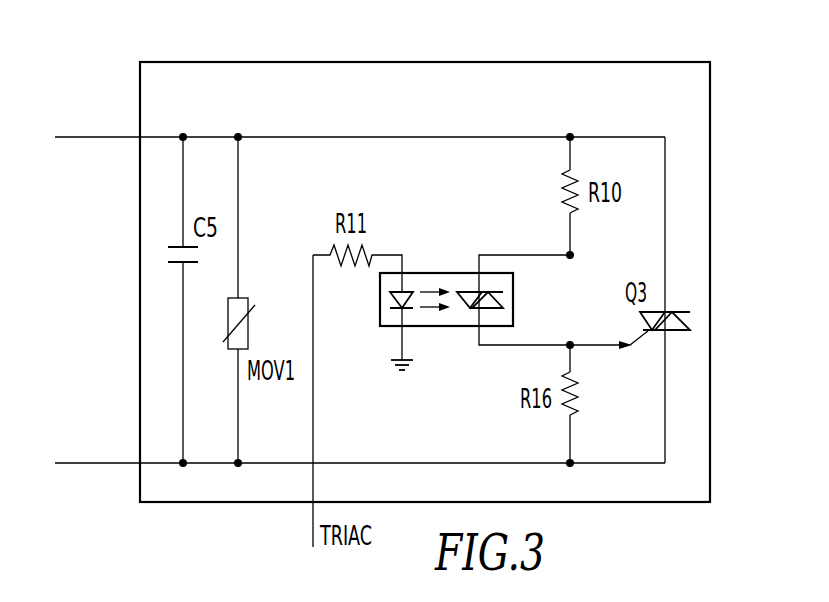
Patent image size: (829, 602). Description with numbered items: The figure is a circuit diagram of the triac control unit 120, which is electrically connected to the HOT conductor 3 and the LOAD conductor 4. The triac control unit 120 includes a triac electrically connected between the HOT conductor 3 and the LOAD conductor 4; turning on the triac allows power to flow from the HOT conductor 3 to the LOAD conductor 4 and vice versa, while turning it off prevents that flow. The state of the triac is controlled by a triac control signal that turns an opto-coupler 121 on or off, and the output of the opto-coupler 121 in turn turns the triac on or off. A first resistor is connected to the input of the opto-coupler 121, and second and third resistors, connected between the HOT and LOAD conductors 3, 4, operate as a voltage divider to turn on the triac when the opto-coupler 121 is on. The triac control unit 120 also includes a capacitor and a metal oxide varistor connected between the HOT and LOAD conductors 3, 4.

The triac control unit 120 is at (562, 62).
The opto-coupler 121 is at (442, 258).
The HOT conductor 3 is at (95, 140).
The LOAD conductor 4 is at (93, 465).